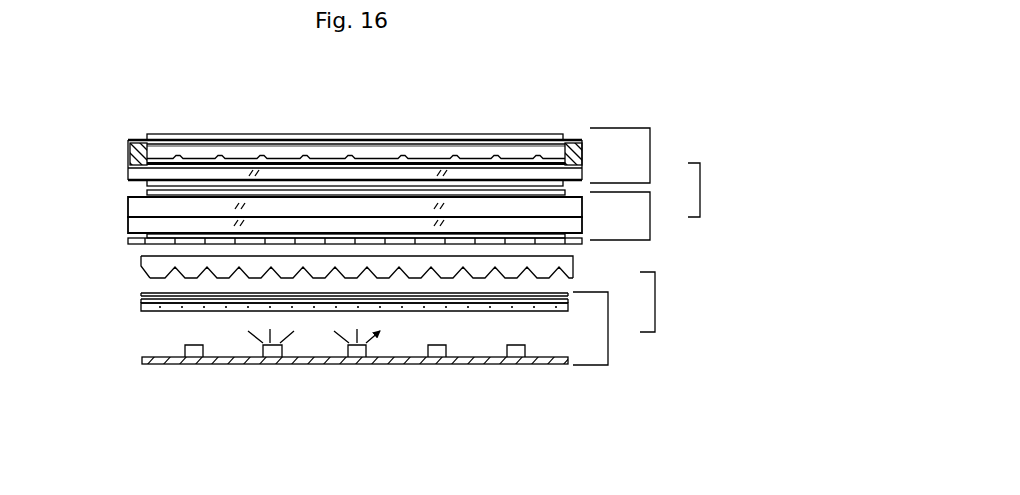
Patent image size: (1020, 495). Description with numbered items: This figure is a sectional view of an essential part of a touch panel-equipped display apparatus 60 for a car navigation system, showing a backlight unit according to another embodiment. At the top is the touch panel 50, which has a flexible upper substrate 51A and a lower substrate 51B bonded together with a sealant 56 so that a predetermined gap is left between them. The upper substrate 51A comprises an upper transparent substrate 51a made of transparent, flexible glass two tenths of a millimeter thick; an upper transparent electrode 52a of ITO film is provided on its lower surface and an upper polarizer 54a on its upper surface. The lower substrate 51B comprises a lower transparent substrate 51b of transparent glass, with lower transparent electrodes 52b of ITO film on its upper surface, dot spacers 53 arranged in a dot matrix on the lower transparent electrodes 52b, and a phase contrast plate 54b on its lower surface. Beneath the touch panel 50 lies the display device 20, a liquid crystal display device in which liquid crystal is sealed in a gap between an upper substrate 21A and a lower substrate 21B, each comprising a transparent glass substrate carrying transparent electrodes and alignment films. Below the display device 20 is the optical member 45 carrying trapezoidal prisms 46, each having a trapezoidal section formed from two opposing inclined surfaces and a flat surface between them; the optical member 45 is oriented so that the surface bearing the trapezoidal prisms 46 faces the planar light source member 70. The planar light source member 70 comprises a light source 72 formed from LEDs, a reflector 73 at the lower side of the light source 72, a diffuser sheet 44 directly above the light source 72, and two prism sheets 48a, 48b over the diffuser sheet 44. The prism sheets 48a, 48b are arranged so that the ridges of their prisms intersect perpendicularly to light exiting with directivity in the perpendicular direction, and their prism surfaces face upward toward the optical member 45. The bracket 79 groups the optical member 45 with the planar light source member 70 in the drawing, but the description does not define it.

The upper transparent substrate 51a is at (187, 141).
The upper substrate 51A is at (124, 140).
The upper transparent electrode 52a is at (240, 147).
The upper polarizer 54a is at (300, 133).
The dot spacers 53 is at (351, 157).
The lower transparent substrate 51b is at (415, 175).
The lower substrate 51B is at (124, 176).
The lower transparent electrodes 52b is at (472, 164).
The phase contrast plate 54b is at (523, 183).
The sealant 56 is at (135, 152).
The touch panel 50 is at (637, 155).
The upper substrate 21A is at (124, 207).
The lower substrate 21B is at (124, 232).
The display device 20 is at (637, 216).
The display apparatus 60 is at (712, 190).
The optical member 45 is at (347, 277).
The trapezoidal prisms 46 is at (192, 279).
The prism sheet 48b is at (141, 295).
The prism sheet 48a is at (141, 302).
The diffuser sheet 44 is at (141, 311).
The optical sheet assembly 79 is at (666, 302).
The planar light source member 70 is at (393, 352).
The light source 72 is at (270, 357).
The reflector 73 is at (327, 364).